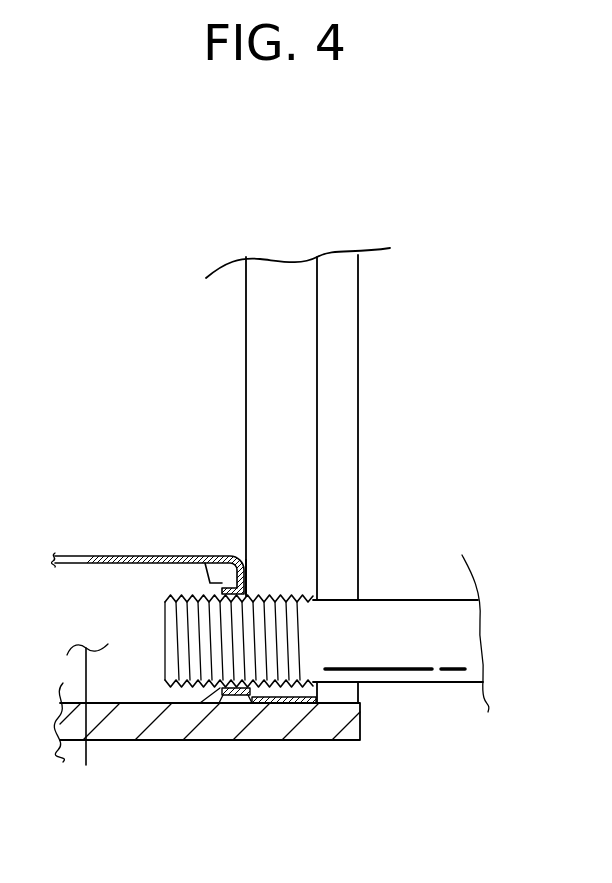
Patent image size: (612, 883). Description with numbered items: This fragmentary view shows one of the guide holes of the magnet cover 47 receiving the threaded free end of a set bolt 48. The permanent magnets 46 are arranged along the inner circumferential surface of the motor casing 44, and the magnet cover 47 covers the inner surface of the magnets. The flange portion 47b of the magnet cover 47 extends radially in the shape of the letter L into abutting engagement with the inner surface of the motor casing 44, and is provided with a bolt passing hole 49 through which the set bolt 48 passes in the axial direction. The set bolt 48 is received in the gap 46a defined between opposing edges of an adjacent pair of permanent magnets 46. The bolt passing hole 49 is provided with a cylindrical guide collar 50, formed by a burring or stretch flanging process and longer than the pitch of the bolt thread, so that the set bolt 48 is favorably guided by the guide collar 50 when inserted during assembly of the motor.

The motor casing 44 is at (135, 741).
The permanent magnets 46 is at (83, 723).
The gap 46a is at (128, 573).
The magnet cover 47 is at (322, 419).
The flange portion 47b is at (248, 577).
The set bolt 48 is at (425, 683).
The bolt passing hole 49 is at (252, 694).
The guide collar 50 is at (226, 693).